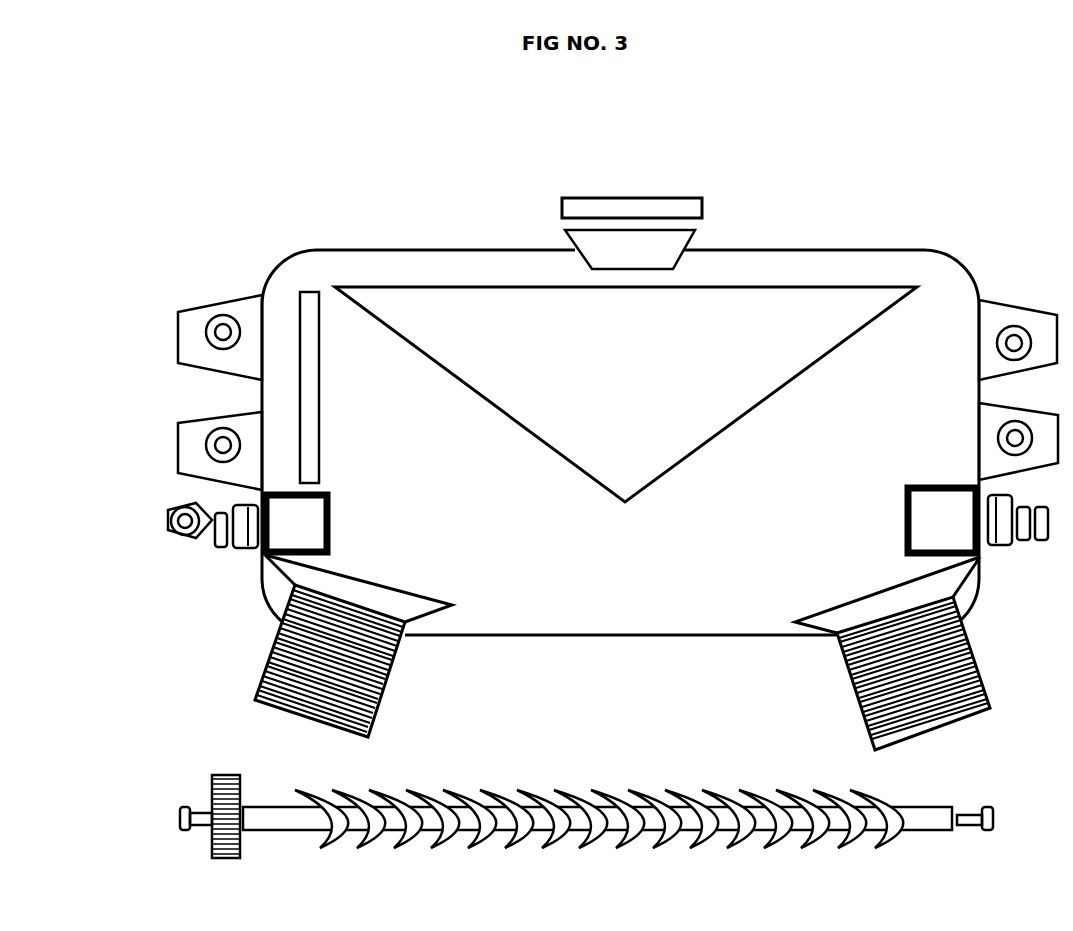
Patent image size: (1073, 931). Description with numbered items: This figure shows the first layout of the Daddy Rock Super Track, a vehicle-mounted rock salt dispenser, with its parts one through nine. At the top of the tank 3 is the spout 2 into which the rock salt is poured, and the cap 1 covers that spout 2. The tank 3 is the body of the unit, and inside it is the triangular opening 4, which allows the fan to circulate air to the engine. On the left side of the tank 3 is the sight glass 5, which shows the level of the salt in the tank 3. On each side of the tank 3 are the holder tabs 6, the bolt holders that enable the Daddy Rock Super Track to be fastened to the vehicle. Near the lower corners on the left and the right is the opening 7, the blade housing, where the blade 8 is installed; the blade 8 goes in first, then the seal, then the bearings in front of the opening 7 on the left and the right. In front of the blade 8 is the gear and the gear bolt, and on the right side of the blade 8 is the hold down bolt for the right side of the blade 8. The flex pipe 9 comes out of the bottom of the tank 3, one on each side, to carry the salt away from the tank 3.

The cap 1 is at (576, 211).
The spout 2 is at (682, 241).
The tank 3 is at (764, 262).
The opening for the radiator fan 4 is at (802, 316).
The sight glass 5 is at (310, 355).
The holder tabs 6 is at (199, 356).
The blade housing opening 7 is at (293, 524).
The blade 8 is at (278, 816).
The flex pipe 9 is at (400, 602).